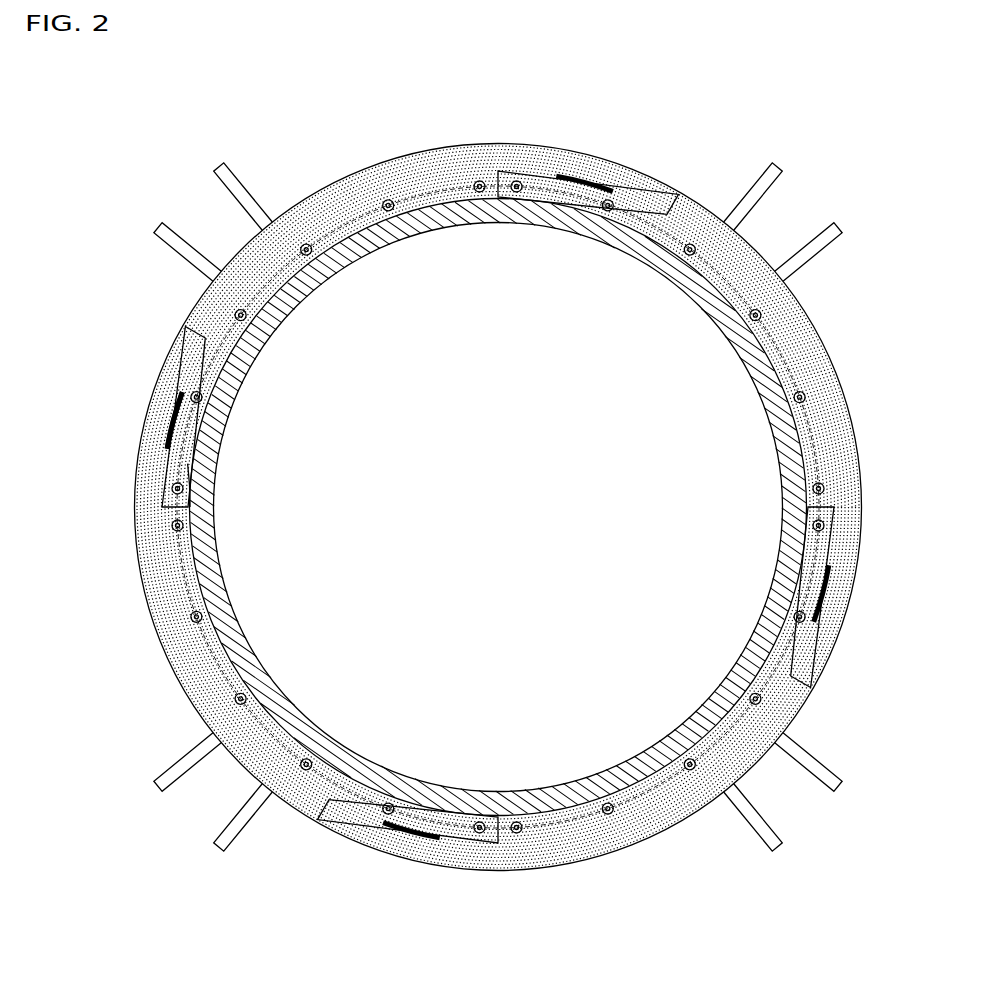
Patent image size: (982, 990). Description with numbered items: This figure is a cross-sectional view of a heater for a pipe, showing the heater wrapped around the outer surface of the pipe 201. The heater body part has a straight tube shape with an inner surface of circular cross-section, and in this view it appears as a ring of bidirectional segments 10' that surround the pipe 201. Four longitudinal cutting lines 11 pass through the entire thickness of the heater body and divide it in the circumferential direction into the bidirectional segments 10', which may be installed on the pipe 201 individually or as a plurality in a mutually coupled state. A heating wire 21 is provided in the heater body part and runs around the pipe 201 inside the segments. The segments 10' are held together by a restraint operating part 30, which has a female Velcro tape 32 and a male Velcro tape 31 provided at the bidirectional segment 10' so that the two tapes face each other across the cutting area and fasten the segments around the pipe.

The bidirectional segment 10' is at (501, 496).
The longitudinal cutting line 11 is at (643, 189).
The heating wire 21 is at (318, 285).
The pipe 201 is at (641, 268).
The restraint operating part 30 is at (586, 180).
The male Velcro tape 31 is at (191, 442).
The female Velcro tape 32 is at (176, 405).